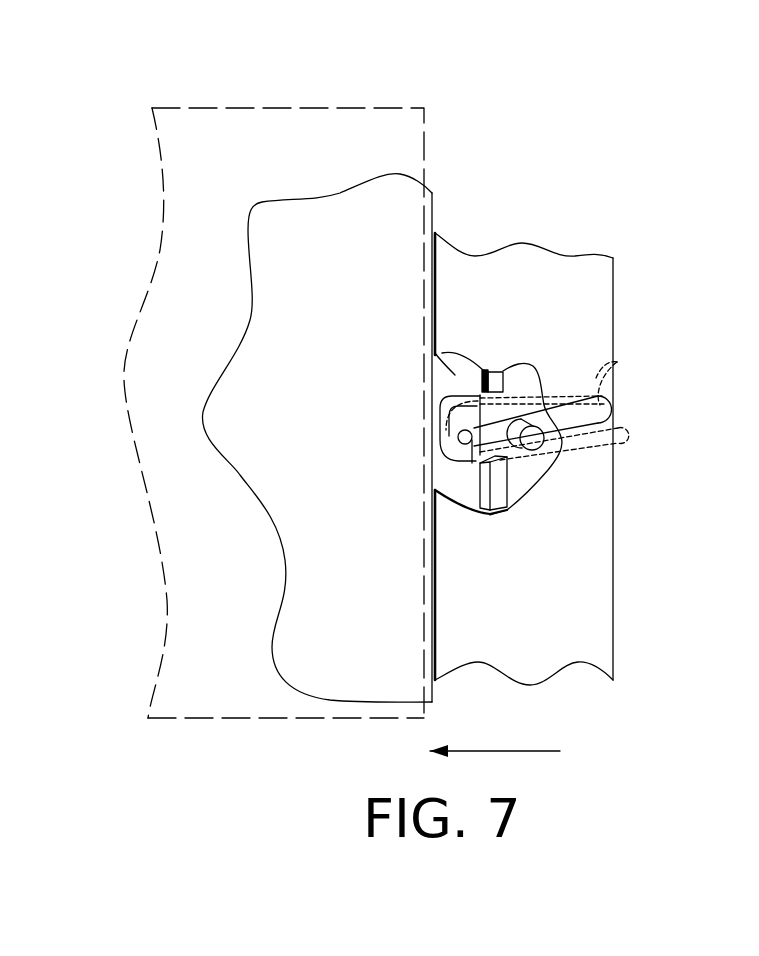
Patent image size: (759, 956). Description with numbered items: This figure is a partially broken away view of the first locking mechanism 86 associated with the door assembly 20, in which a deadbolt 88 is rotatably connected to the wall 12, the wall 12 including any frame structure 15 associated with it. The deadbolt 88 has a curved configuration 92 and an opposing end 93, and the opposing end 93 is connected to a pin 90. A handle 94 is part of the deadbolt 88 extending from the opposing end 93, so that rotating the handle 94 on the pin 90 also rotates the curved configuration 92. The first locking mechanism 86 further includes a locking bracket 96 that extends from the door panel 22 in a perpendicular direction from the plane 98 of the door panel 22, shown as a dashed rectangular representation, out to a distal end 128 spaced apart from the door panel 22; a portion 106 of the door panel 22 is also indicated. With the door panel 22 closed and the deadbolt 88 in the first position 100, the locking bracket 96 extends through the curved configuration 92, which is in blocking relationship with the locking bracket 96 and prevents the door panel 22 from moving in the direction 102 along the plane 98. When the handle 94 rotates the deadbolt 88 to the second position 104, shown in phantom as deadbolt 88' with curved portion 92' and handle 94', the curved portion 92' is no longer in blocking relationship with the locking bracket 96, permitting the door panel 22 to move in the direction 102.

The door assembly 20 is at (448, 63).
The first locking mechanism 86 is at (458, 106).
The plane of door panel 98 is at (262, 128).
The frame structure 15 is at (553, 270).
The wall 12 is at (537, 330).
The door panel 22 is at (313, 295).
The second position 104 is at (483, 372).
The portion of door panel 106 is at (436, 353).
The curved configuration 92 is at (402, 416).
The curved portion (in phantom) 92' is at (380, 387).
The locking bracket 96 is at (457, 442).
The first position 100 is at (448, 454).
The distal end 128 is at (478, 446).
The deadbolt 88 is at (543, 423).
The opposing end 93 is at (505, 404).
The deadbolt (in phantom) 88' is at (645, 368).
The handle 94 is at (645, 393).
The pin 90 is at (534, 438).
The handle (in phantom) 94' is at (582, 462).
The direction 102 is at (507, 750).